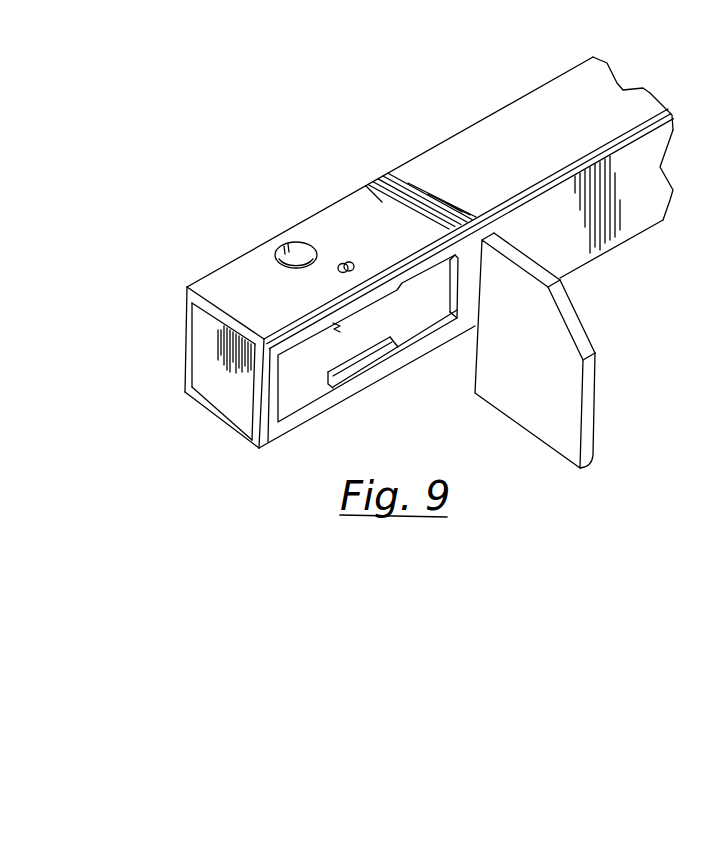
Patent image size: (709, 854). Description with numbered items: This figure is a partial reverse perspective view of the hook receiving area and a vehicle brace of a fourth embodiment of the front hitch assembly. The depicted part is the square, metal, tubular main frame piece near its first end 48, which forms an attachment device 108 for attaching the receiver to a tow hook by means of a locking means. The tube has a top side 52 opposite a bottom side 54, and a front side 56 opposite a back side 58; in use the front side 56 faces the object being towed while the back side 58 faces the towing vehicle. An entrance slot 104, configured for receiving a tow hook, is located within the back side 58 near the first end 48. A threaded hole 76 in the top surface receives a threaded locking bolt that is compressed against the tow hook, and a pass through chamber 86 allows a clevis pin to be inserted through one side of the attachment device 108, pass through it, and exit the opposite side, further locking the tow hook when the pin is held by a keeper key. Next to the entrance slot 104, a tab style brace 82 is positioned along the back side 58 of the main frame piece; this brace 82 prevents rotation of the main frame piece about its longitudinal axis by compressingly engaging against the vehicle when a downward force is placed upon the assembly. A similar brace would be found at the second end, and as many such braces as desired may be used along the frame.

The attachment device 108 is at (373, 282).
The first end 48 is at (399, 282).
The top side 52 is at (232, 426).
The bottom side 54 is at (423, 200).
The front side 56 is at (187, 343).
The back side 58 is at (455, 310).
The threaded hole 76 is at (295, 243).
The pass through chamber 86 is at (342, 262).
The tab style brace 82 is at (590, 380).
The entrance slot 104 is at (300, 377).